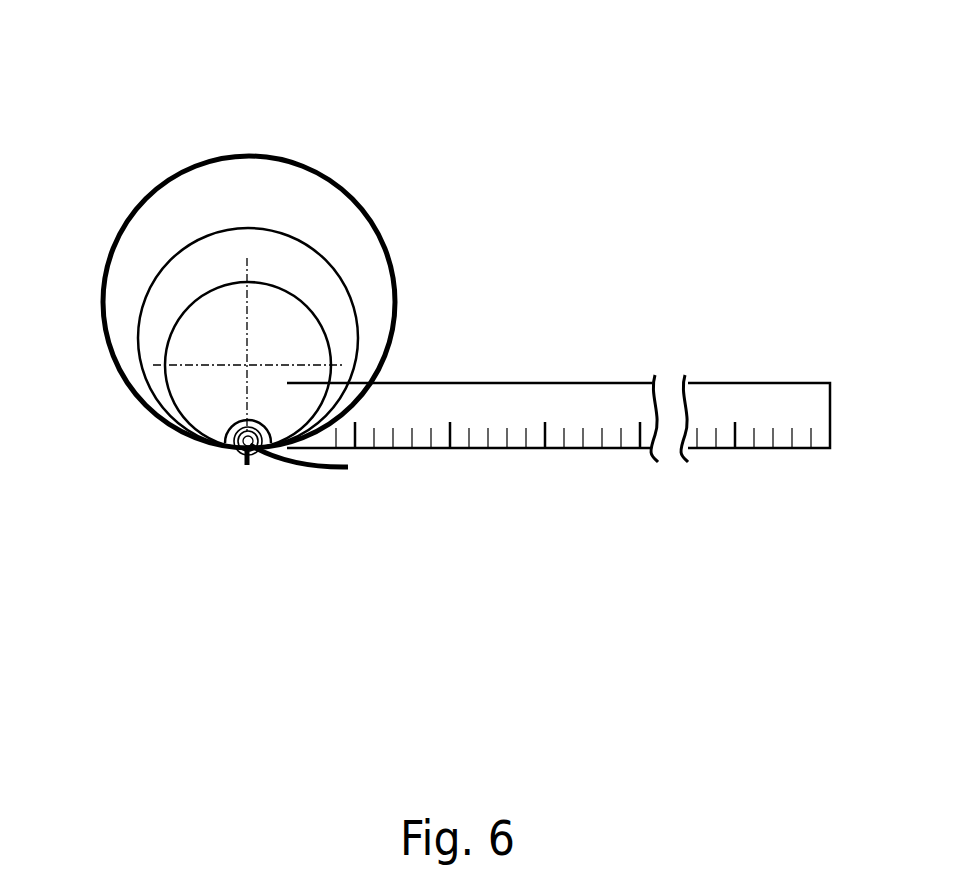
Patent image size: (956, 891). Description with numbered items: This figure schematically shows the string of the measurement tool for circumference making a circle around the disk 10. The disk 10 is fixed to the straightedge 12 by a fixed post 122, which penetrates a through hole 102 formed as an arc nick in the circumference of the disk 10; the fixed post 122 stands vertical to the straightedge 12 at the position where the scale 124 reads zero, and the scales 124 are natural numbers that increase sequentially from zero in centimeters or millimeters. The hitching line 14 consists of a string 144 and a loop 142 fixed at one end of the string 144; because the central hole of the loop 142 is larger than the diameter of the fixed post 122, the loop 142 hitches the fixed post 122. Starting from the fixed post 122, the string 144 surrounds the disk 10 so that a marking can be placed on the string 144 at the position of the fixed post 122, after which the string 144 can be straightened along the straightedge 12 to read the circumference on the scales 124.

The disk 10 is at (125, 357).
The straightedge 12 is at (571, 398).
The hitching line 14 is at (240, 154).
The through hole 102 is at (232, 445).
The fixed post 122 is at (258, 452).
The scales 124 is at (740, 437).
The loop 142 is at (247, 422).
The string 144 is at (125, 212).